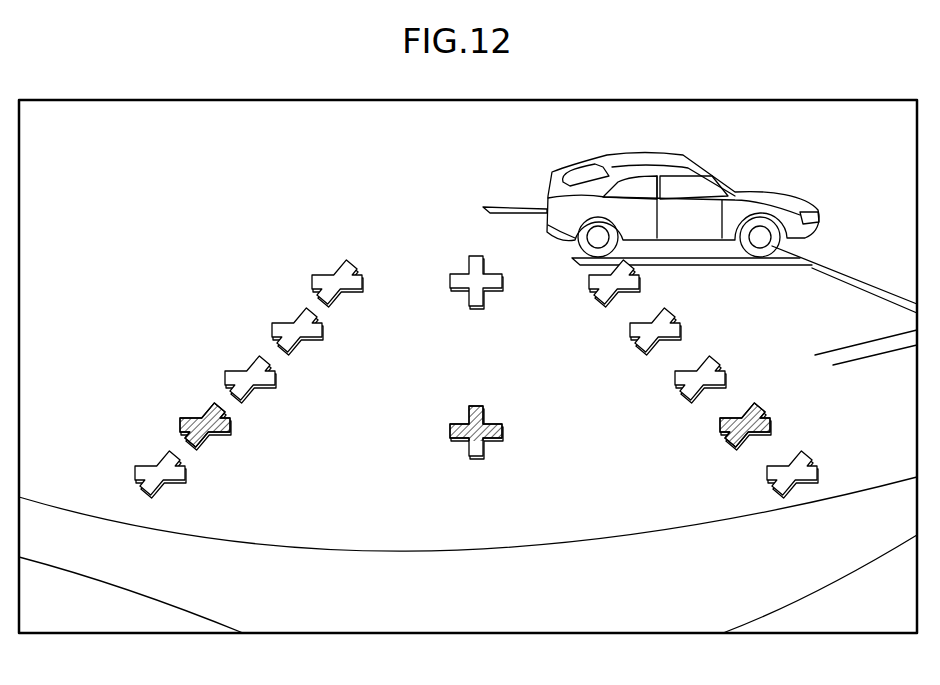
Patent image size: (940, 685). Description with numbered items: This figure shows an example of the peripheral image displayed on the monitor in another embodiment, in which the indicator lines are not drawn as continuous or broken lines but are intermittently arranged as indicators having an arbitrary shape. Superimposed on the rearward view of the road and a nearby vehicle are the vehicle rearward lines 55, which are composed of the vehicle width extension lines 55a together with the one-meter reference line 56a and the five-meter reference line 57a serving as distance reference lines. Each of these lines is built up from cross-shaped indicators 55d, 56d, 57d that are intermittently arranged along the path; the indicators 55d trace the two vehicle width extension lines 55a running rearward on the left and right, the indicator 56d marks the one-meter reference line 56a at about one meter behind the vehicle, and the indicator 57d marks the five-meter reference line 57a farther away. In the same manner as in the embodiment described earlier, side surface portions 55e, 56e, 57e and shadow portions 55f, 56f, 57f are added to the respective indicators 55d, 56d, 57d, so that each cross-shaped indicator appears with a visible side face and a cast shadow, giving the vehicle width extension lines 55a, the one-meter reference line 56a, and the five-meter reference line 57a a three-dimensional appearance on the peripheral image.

The vehicle rearward lines 55 is at (194, 249).
The vehicle width extension lines 55a is at (148, 511).
The cross-shaped indicator 55d is at (287, 324).
The side surface portion 55e is at (270, 337).
The shadow portion 55f is at (312, 344).
The 1 m reference line 56a is at (493, 402).
The cross-shaped indicator 56d is at (203, 413).
The side surface portion 56e is at (220, 433).
The shadow portion 56f is at (207, 443).
The 5 m reference line 57a is at (425, 268).
The cross-shaped indicator 57d is at (470, 262).
The side surface portion 57e is at (458, 292).
The shadow portion 57f is at (490, 293).